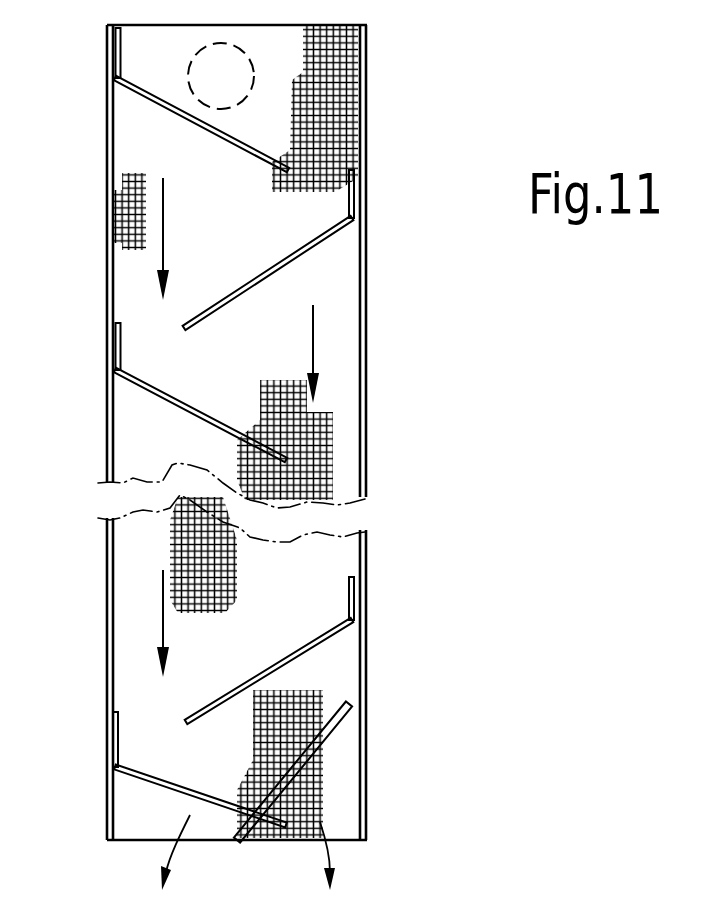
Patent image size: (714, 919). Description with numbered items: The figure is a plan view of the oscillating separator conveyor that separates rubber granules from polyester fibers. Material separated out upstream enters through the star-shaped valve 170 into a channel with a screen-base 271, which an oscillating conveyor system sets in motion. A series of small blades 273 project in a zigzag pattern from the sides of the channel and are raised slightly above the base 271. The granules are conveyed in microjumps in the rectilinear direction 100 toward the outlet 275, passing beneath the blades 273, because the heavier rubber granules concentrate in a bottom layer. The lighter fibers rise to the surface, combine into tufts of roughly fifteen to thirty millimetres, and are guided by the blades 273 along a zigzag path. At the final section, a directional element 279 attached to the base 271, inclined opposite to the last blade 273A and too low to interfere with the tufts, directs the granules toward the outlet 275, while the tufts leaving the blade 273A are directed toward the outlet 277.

The star-shaped valve 170 is at (246, 52).
The rectilinear direction f100 100 is at (163, 222).
The screen-base channel 271 is at (333, 424).
The small blades 273 is at (150, 100).
The last blade 273A is at (207, 796).
The outlet 275 is at (140, 857).
The outlet 277 is at (322, 872).
The directional element 279 is at (338, 733).